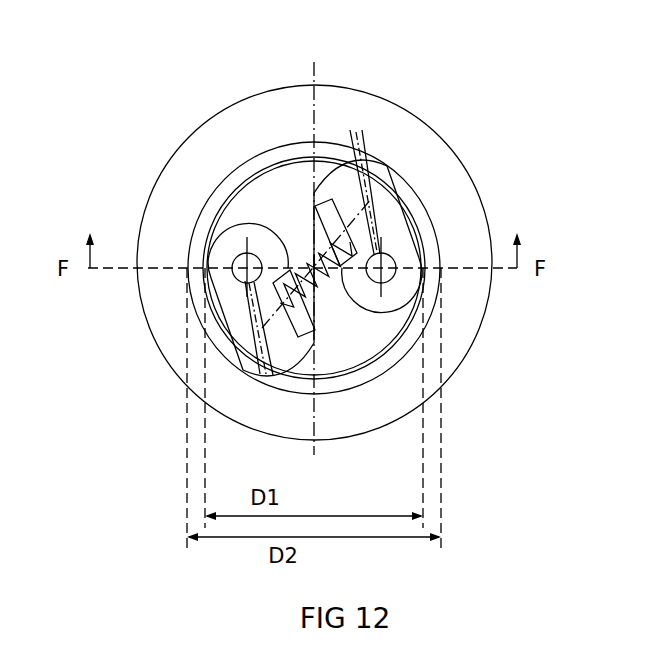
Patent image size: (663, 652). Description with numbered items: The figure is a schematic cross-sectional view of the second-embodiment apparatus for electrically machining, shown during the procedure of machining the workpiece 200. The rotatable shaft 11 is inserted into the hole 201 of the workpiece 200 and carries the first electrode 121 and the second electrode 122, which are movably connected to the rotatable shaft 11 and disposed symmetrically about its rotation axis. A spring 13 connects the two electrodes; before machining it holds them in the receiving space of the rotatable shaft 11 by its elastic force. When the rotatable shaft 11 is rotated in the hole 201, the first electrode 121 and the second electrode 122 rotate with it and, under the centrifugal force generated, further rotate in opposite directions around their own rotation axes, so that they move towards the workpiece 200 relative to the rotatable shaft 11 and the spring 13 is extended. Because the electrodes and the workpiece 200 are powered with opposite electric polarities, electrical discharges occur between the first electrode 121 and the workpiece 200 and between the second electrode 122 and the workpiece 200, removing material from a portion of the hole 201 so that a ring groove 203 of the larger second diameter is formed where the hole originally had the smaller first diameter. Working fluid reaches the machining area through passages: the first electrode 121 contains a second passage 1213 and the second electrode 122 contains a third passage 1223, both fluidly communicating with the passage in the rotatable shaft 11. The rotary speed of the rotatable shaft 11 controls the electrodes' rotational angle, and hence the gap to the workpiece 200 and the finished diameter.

The rotatable shaft 11 is at (262, 213).
The spring 13 is at (360, 203).
The first electrode 121 is at (202, 346).
The second electrode 122 is at (435, 178).
The workpiece 200 is at (170, 160).
The hole 201 is at (227, 212).
The ring groove 203 is at (413, 208).
The second passage 1213 is at (260, 342).
The third passage 1223 is at (355, 130).